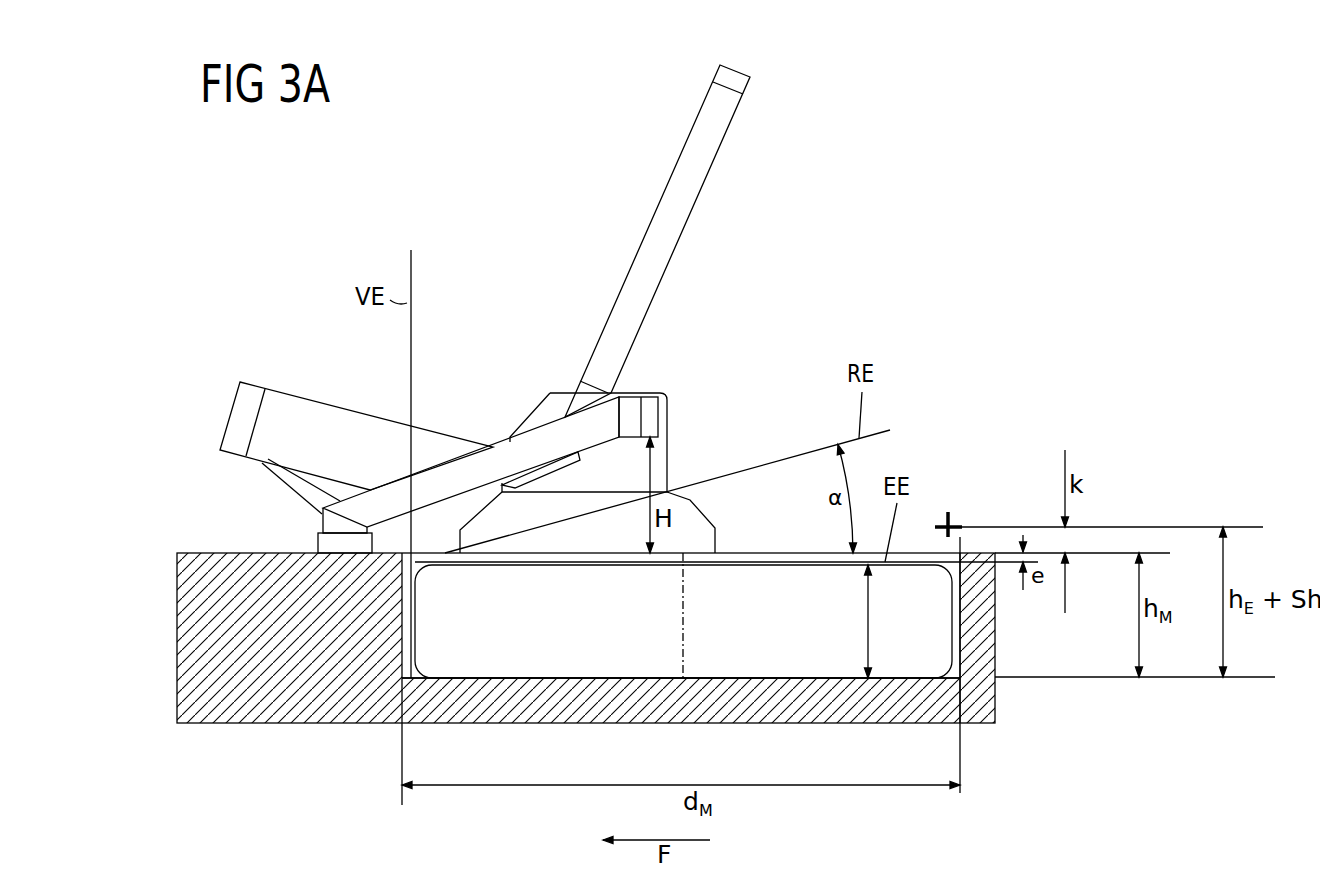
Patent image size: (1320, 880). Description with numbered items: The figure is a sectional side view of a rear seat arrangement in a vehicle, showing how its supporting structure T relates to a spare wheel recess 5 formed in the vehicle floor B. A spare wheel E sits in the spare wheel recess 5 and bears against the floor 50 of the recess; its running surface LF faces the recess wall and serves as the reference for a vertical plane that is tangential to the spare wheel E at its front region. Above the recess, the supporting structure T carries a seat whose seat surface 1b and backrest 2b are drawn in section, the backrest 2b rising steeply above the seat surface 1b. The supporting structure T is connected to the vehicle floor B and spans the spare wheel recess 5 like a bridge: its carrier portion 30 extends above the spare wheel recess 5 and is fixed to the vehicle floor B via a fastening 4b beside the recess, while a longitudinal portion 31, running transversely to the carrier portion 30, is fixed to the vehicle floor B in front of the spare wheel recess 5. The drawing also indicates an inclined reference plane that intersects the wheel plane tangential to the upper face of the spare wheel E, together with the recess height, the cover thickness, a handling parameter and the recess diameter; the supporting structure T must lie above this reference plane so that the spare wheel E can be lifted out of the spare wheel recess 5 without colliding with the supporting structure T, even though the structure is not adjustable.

The seat surface 1b is at (287, 407).
The backrest 2b is at (690, 170).
The fastening 4b is at (508, 512).
The carrier portion 30 is at (647, 407).
The longitudinal portion 31 is at (356, 508).
The spare wheel recess 5 is at (398, 675).
The floor 50 is at (775, 662).
The vehicle floor B is at (212, 552).
The spare wheel E is at (577, 635).
The supporting structure T is at (667, 368).
The running surface LF is at (412, 643).